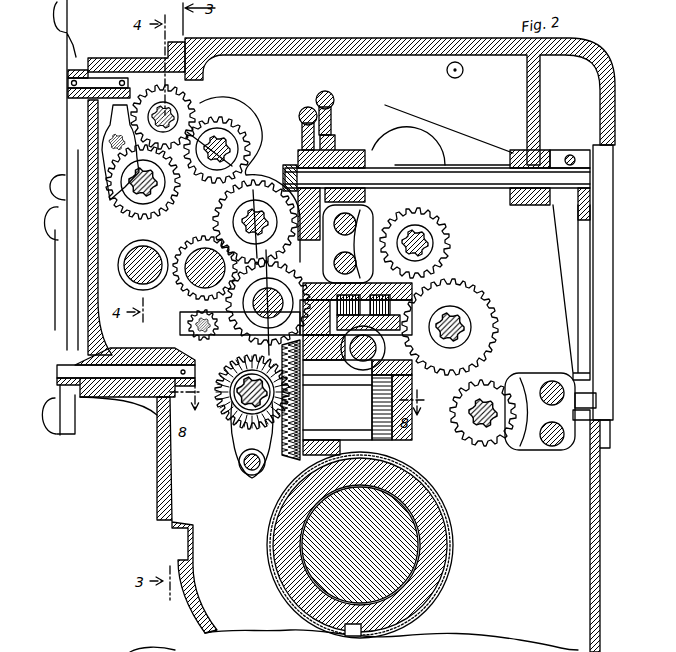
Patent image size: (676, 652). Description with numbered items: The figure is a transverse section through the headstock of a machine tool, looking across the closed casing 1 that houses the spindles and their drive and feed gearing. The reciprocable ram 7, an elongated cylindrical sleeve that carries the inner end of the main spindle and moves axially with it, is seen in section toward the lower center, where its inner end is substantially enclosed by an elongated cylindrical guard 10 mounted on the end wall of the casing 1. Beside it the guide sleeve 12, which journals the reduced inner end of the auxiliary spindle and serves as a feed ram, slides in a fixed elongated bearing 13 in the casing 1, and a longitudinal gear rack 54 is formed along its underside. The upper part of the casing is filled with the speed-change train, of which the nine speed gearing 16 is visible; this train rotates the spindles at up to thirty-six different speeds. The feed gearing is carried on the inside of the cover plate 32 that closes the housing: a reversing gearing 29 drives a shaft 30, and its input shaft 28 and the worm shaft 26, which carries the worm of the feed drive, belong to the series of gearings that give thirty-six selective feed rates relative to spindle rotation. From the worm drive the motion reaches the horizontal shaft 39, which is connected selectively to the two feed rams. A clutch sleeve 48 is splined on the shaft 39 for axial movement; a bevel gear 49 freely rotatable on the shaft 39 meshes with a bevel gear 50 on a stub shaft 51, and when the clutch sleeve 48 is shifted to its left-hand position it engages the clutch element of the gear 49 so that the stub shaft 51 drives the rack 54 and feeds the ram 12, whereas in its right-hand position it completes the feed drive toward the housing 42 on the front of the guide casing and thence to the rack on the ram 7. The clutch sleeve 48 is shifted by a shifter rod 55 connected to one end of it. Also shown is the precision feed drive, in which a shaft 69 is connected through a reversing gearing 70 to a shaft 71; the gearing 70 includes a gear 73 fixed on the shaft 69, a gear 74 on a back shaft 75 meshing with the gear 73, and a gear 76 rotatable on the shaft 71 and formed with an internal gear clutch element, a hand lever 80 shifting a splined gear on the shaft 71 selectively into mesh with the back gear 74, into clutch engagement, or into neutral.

The closed casing 1 is at (600, 536).
The reciprocable ram 7 is at (280, 555).
The cylindrical guard 10 is at (446, 520).
The guide sleeve 12 is at (301, 588).
The fixed elongated bearing 13 is at (431, 328).
The nine speed gearing 16 is at (474, 277).
The worm shaft 26 is at (126, 258).
The shaft 28 is at (217, 138).
The reversing gearing 29 is at (246, 127).
The shaft 30 is at (125, 210).
The cover plate 32 is at (157, 538).
The horizontal shaft 39 is at (232, 372).
The housing 42 is at (356, 361).
The clutch sleeve 48 is at (248, 418).
The bevel gear 49 is at (255, 385).
The bevel gear 50 is at (288, 460).
The stub shaft 51 is at (330, 450).
The gear rack 54 is at (363, 348).
The shifter rod 55 is at (240, 473).
The shaft 69 is at (255, 230).
The reversing gearing 70 is at (210, 225).
The shaft 71 is at (252, 303).
The gear 73 is at (292, 176).
The gear 74 is at (190, 250).
The back shaft 75 is at (188, 291).
The gear 76 is at (214, 328).
The hand lever 80 is at (66, 420).